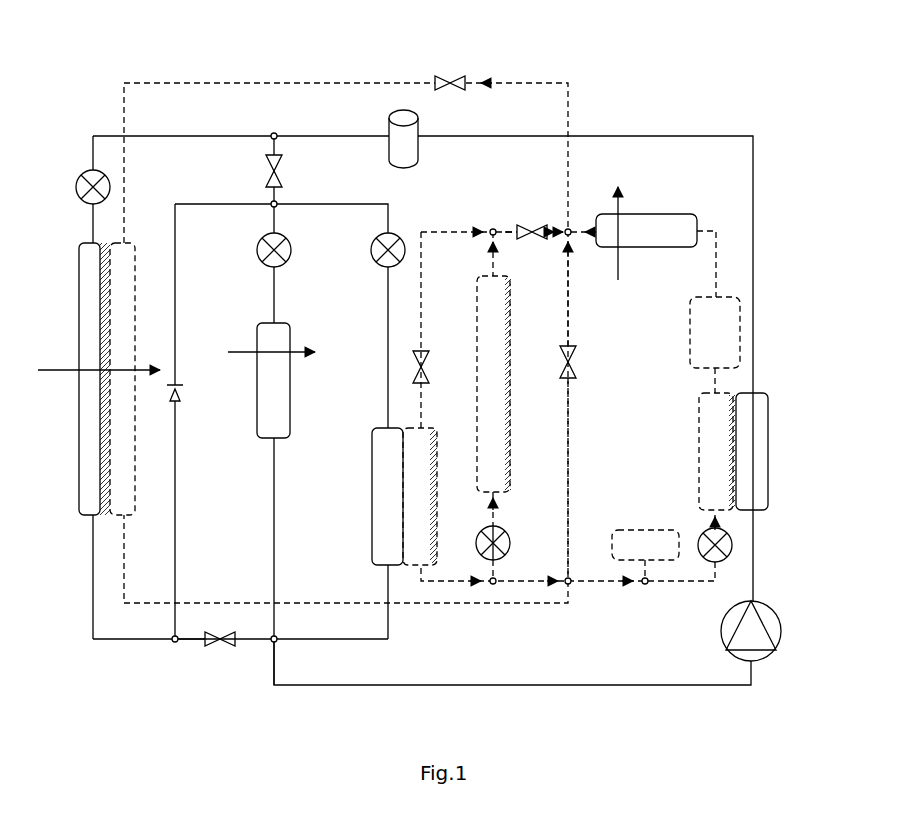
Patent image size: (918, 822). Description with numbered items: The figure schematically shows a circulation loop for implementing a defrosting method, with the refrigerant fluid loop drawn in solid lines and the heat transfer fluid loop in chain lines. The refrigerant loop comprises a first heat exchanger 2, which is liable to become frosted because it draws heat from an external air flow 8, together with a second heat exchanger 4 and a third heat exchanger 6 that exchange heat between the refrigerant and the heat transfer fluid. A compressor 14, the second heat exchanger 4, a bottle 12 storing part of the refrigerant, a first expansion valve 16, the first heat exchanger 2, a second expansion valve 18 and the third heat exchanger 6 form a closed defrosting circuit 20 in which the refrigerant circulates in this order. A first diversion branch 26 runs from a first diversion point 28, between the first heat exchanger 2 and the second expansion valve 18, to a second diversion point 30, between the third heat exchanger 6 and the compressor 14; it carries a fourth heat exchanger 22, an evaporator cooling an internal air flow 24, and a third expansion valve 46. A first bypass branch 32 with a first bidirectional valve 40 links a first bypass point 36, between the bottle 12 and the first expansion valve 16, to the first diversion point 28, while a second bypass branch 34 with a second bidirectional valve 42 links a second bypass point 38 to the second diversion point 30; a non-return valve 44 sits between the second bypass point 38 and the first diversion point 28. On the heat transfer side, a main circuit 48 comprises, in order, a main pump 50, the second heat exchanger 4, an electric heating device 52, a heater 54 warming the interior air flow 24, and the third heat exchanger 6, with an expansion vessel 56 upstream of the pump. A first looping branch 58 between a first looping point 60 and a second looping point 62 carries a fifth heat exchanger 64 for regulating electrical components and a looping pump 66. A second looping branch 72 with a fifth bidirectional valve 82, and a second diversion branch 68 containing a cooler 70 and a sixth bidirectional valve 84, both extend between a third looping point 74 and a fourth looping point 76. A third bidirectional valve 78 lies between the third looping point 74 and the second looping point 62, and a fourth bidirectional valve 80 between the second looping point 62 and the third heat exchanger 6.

The first heat exchanger 2 is at (76, 452).
The second heat exchanger 4 is at (692, 465).
The third heat exchanger 6 is at (365, 482).
The air flow 8 is at (57, 365).
The bottle 12 is at (414, 177).
The compressor 14 is at (778, 660).
The first expansion valve 16 is at (74, 194).
The second expansion valve 18 is at (375, 264).
The defrosting circuit 20 is at (672, 136).
The fourth heat exchanger 22 is at (250, 428).
The internal air flow 24 is at (237, 345).
The first diversion branch 26 is at (266, 558).
The first diversion point 28 is at (277, 205).
The second diversion point 30 is at (271, 644).
The first bypass branch 32 is at (265, 153).
The second bypass branch 34 is at (188, 644).
The first bypass point 36 is at (274, 133).
The second bypass point 38 is at (171, 643).
The first bidirectional valve 40 is at (265, 179).
The second bidirectional valve 42 is at (224, 632).
The non-return valve 44 is at (172, 398).
The third expansion valve 46 is at (258, 248).
The main circuit 48 is at (716, 225).
The main pump 50 is at (701, 532).
The electric heating device 52 is at (680, 348).
The heater 54 is at (678, 252).
The expansion vessel 56 is at (620, 528).
The first looping branch 58 is at (498, 528).
The first looping point 60 is at (491, 586).
The second looping point 62 is at (493, 226).
The fifth heat exchanger 64 is at (512, 368).
The looping pump 66 is at (477, 546).
The second diversion branch 68 is at (525, 83).
The cooler 70 is at (135, 332).
The second looping branch 72 is at (568, 425).
The third looping point 74 is at (565, 228).
The fourth looping point 76 is at (570, 576).
The third bidirectional valve 78 is at (532, 241).
The fourth bidirectional valve 80 is at (430, 352).
The fifth bidirectional valve 82 is at (575, 354).
The sixth bidirectional valve 84 is at (451, 78).